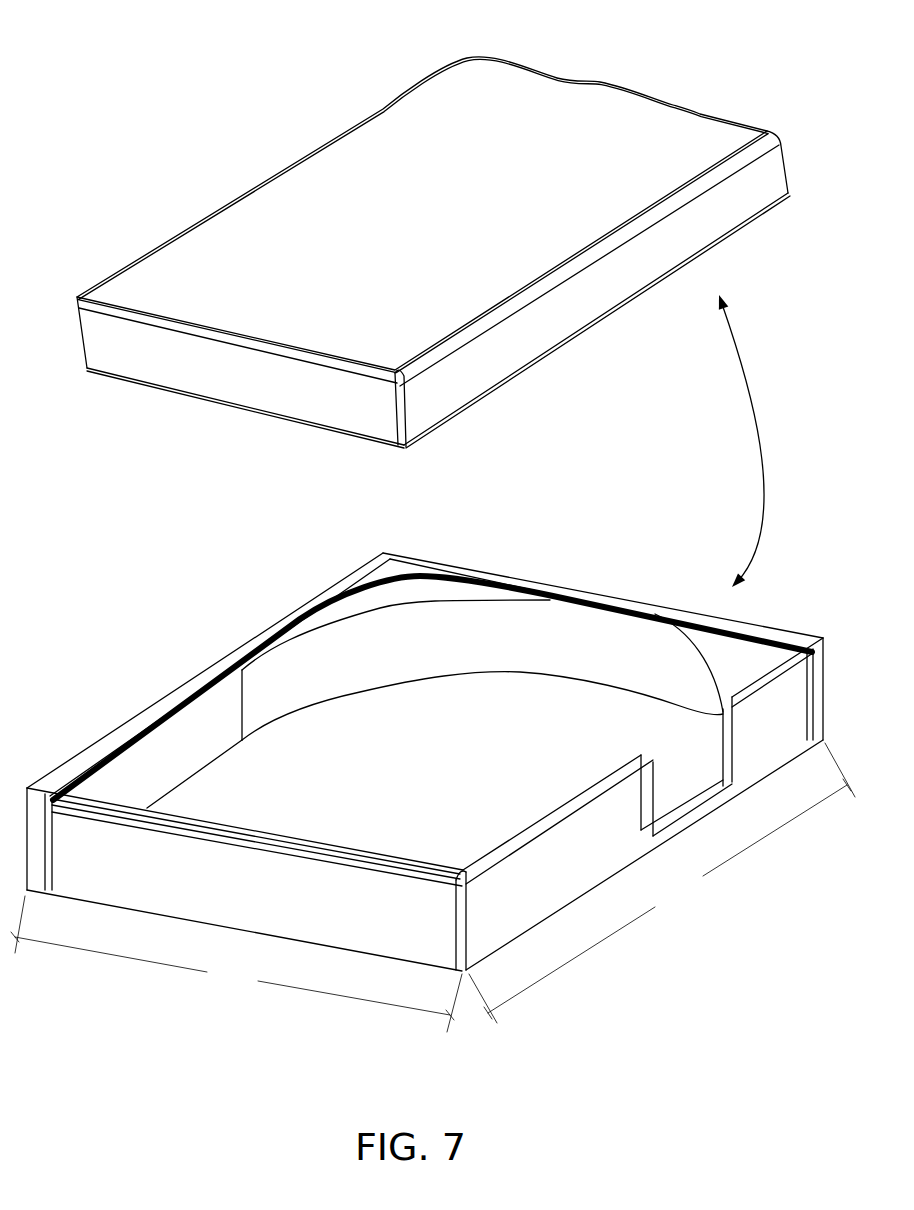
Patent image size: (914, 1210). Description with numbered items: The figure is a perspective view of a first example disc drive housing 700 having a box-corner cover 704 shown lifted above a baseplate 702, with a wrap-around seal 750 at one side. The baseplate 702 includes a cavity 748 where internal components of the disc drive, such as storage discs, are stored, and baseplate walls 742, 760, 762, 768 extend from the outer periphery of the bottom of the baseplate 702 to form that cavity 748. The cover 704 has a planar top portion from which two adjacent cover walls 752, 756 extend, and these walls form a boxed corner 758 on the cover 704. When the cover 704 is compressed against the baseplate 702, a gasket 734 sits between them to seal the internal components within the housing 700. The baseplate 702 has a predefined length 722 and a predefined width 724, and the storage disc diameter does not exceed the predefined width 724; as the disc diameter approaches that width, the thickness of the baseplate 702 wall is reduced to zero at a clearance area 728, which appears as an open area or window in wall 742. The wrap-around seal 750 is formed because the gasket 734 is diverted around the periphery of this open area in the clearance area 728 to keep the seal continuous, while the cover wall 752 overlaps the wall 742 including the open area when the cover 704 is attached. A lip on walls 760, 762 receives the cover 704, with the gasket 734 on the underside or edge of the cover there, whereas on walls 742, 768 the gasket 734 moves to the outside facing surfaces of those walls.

The disc drive housing 700 is at (127, 85).
The box-corner cover 704 is at (466, 206).
The cover wall 752 is at (632, 290).
The cover wall 756 is at (252, 388).
The boxed corner 758 is at (403, 328).
The baseplate 702 is at (474, 755).
The baseplate wall 768 is at (276, 905).
The baseplate wall 742 is at (556, 893).
The clearance area 728 is at (711, 756).
The wrap-around seal 750 is at (672, 761).
The gasket 734 is at (427, 577).
The cavity 748 is at (522, 691).
The baseplate wall 760 is at (230, 657).
The baseplate wall 762 is at (665, 608).
The predefined length 722 is at (697, 896).
The predefined width 724 is at (249, 986).